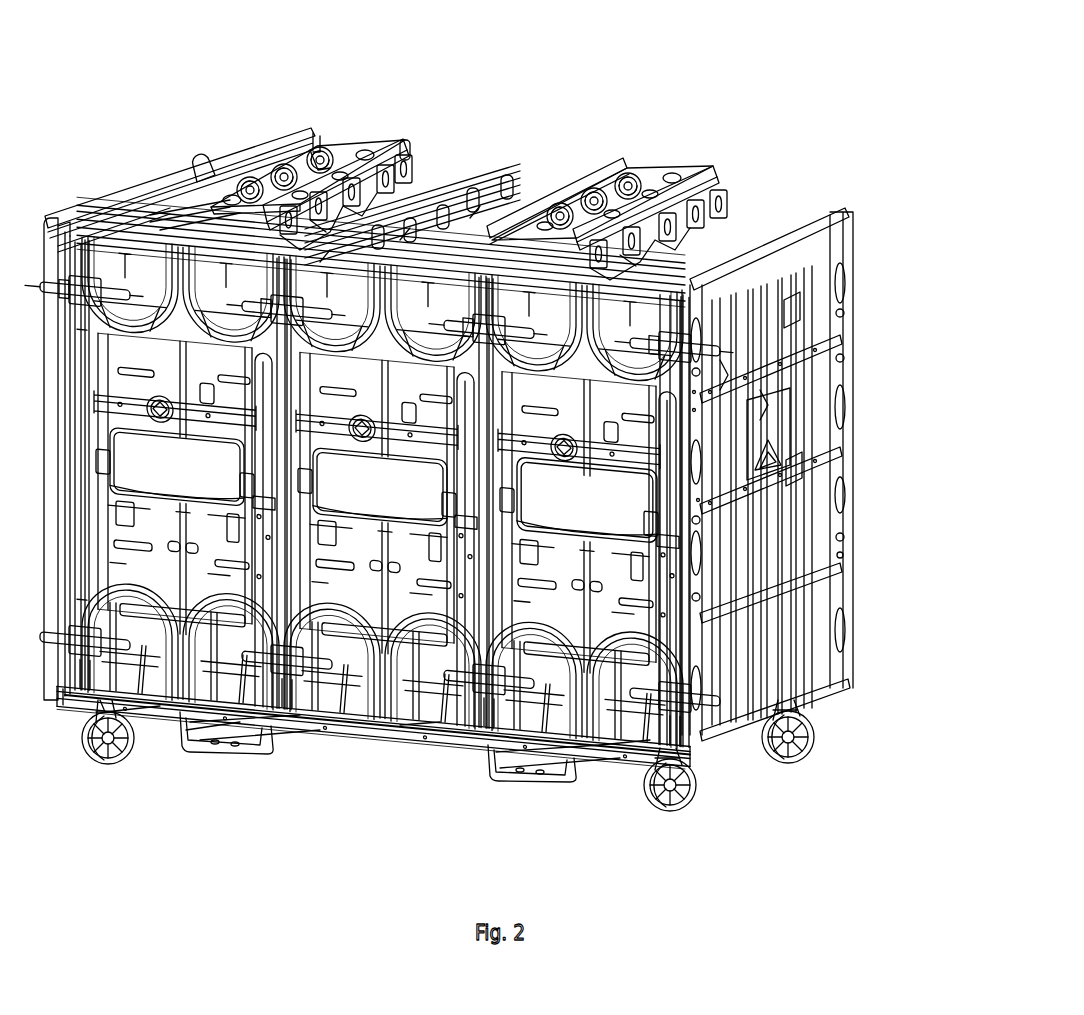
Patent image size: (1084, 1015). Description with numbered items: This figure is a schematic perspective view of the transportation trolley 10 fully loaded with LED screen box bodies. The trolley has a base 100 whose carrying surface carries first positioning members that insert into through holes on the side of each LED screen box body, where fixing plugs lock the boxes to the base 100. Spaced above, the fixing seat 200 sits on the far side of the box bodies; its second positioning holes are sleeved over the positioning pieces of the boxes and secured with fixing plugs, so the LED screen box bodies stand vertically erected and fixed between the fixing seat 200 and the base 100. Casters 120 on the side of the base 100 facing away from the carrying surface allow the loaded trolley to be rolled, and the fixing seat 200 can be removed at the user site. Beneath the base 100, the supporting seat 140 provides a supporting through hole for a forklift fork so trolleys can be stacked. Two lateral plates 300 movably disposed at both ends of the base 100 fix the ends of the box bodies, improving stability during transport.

The transportation trolley 10 is at (485, 47).
The base 100 is at (390, 727).
The caster 120 is at (818, 729).
The supporting seat 140 is at (490, 762).
The fixing seat 200 is at (662, 170).
The lateral plate 300 is at (853, 448).